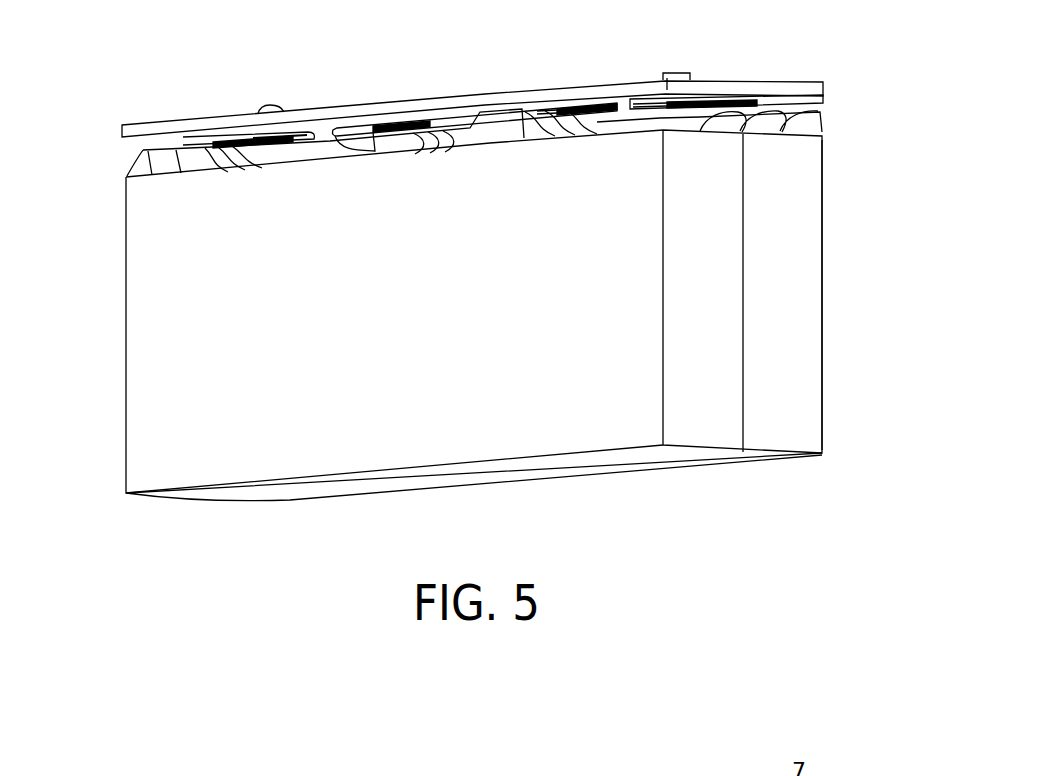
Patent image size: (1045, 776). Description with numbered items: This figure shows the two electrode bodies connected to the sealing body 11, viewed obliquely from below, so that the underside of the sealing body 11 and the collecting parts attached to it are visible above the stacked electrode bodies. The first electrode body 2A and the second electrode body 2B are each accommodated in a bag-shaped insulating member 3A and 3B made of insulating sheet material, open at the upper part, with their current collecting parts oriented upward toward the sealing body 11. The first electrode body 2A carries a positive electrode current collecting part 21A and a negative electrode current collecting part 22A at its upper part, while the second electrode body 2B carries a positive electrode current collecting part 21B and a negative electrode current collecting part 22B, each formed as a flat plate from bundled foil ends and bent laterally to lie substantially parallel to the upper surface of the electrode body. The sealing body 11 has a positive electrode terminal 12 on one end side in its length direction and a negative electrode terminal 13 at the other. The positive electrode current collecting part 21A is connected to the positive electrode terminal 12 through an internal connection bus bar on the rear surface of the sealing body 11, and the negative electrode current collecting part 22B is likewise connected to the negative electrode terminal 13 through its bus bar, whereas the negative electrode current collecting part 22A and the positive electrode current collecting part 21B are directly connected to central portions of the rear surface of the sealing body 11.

The first electrode body 2A is at (850, 321).
The second electrode body 2B is at (104, 396).
The insulating member 3A is at (780, 433).
The insulating member 3B is at (705, 432).
The sealing body 11 is at (598, 80).
The positive electrode terminal 12 is at (682, 73).
The negative electrode terminal 13 is at (268, 105).
The positive electrode current collecting part 21A is at (822, 122).
The positive electrode current collecting part 21B is at (500, 120).
The negative electrode current collecting part 22A is at (338, 125).
The negative electrode current collecting part 22B is at (133, 153).